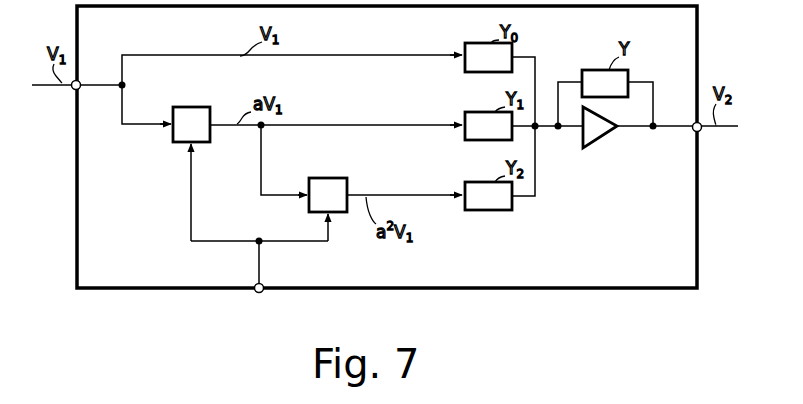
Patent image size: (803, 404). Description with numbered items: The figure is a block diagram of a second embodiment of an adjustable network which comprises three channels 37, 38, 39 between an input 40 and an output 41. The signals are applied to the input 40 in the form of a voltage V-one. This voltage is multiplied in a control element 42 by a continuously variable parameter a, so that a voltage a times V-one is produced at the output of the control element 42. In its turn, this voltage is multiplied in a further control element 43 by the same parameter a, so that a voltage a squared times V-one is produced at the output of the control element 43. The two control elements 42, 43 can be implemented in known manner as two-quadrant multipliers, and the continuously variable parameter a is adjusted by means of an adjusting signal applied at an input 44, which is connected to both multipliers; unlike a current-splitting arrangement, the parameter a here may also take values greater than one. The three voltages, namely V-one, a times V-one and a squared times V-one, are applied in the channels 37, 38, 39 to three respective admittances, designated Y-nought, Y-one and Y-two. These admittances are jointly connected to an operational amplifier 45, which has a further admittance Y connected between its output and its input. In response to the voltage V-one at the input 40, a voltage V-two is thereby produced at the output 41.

The channel 37 is at (433, 45).
The channel 38 is at (433, 108).
The channel 39 is at (433, 177).
The input 40 is at (70, 90).
The output 41 is at (702, 131).
The control element 42 is at (173, 142).
The control element 43 is at (309, 204).
The input 44 is at (263, 292).
The operational amplifier 45 is at (601, 143).